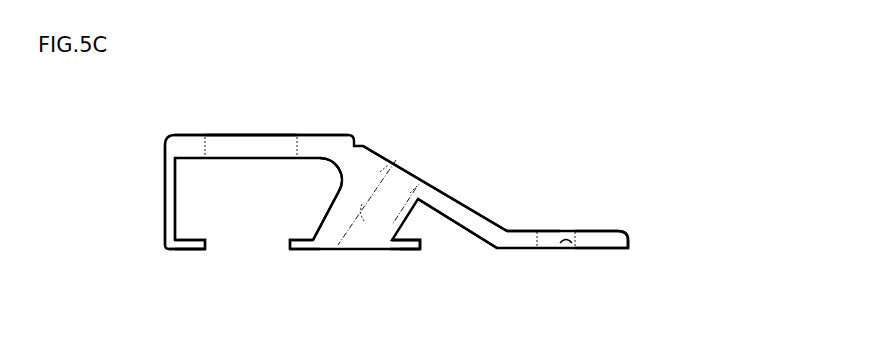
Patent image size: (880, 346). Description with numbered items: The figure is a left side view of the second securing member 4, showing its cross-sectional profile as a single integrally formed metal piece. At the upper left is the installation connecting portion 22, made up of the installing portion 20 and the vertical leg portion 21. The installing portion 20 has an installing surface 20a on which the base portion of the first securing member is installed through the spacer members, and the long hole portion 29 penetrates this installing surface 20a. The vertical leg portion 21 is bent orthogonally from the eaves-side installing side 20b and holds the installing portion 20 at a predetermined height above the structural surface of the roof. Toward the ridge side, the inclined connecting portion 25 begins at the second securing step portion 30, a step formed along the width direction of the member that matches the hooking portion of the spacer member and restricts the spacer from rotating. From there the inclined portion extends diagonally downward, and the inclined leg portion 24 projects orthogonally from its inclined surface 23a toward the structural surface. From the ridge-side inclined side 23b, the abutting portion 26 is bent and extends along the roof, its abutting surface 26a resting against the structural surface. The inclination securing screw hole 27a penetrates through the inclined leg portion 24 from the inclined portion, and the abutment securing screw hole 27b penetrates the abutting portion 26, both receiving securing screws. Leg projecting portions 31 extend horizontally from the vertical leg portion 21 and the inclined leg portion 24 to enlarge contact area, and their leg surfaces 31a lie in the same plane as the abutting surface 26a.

The second securing member 4 is at (718, 157).
The installing portion 20 is at (396, 192).
The installing surface 20a is at (333, 135).
The eaves-side installing side 20b is at (165, 140).
The vertical leg portion 21 is at (173, 208).
The installation connecting portion 22 is at (86, 172).
The inclined surface 23a is at (470, 207).
The ridge-side inclined side 23b is at (513, 231).
The inclined leg portion 24 is at (333, 207).
The inclined connecting portion 25 is at (472, 118).
The abutting portion 26 is at (602, 240).
The abutting surface 26a is at (607, 258).
The inclination securing screw hole 27a is at (432, 241).
The abutment securing screw hole 27b is at (562, 266).
The long hole portion 29 is at (222, 142).
The second securing step portion 30 is at (364, 146).
The leg projecting portions 31 is at (184, 250).
The leg surfaces 31a is at (192, 251).